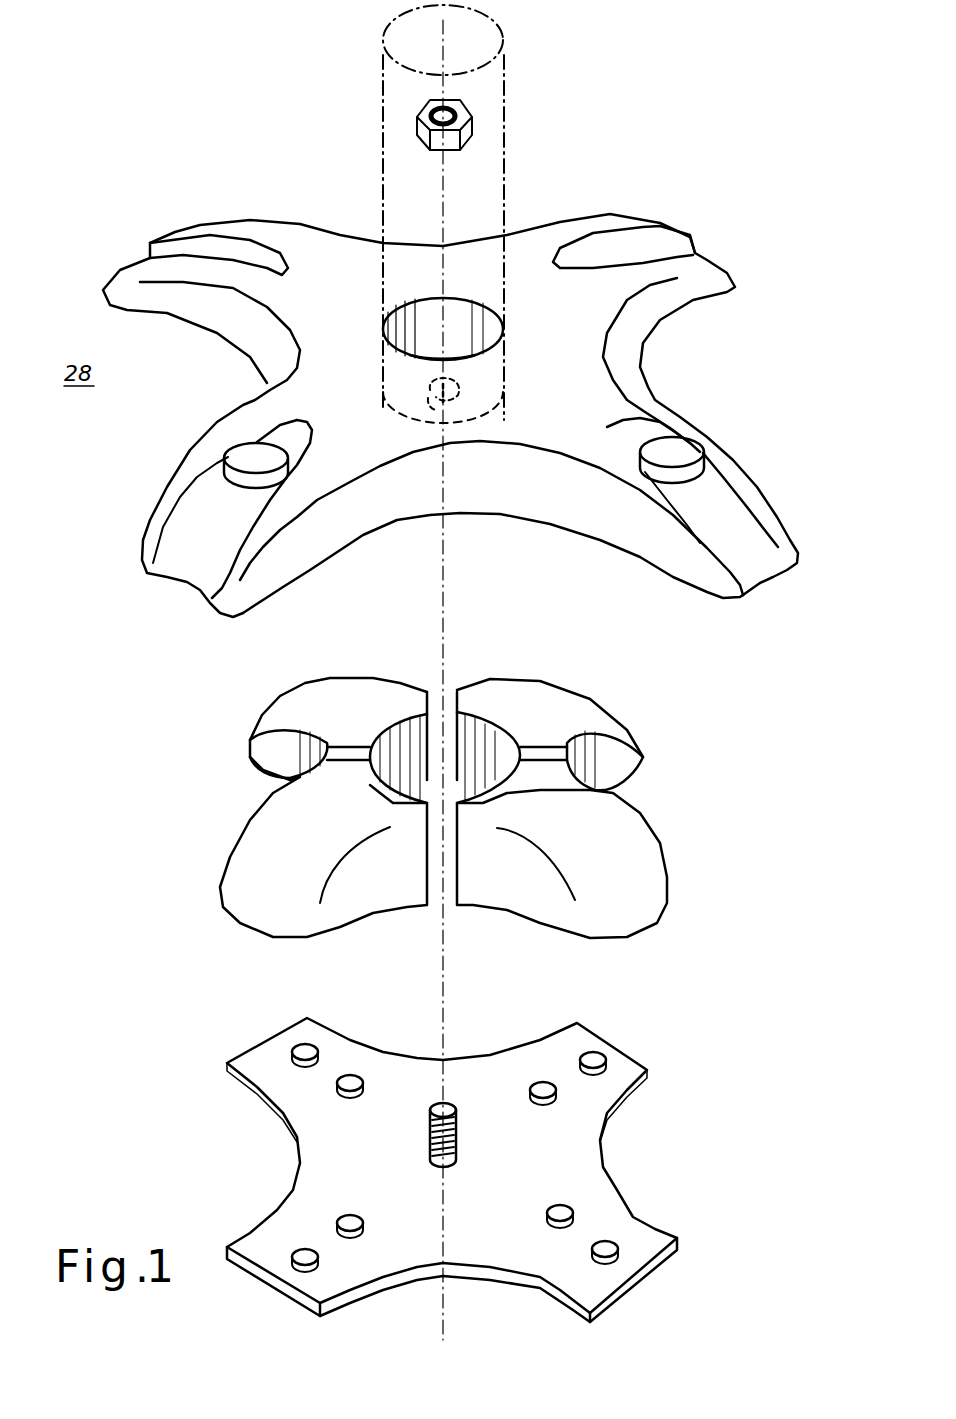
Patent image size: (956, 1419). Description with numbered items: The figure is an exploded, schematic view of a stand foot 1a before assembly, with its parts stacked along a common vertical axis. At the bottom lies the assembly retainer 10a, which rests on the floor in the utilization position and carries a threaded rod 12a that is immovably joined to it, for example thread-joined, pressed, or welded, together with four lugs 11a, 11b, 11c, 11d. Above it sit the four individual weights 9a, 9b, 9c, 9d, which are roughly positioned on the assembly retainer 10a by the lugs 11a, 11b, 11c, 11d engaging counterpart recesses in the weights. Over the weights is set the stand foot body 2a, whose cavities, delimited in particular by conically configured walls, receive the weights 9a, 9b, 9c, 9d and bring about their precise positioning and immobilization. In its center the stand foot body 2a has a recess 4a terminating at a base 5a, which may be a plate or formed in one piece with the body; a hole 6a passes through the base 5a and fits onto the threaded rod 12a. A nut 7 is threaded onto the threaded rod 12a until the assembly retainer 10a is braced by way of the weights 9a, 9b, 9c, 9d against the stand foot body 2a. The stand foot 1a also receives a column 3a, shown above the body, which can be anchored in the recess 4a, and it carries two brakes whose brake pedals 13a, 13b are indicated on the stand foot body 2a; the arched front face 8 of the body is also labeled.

The stand foot 1a is at (343, 220).
The stand foot body 2a is at (575, 393).
The column 3a is at (503, 173).
The recess 4a is at (484, 328).
The base 5a is at (487, 398).
The hole 6a is at (432, 407).
The nut 7 is at (470, 137).
The arched front face 8 is at (440, 543).
The individual weight 9a is at (285, 715).
The individual weight 9b is at (600, 718).
The individual weight 9c is at (650, 898).
The individual weight 9d is at (250, 875).
The assembly retainer 10a is at (480, 1161).
The lug 11a is at (293, 1055).
The lug 11b is at (603, 1076).
The lug 11c is at (593, 1238).
The lug 11d is at (338, 1226).
The threaded rod 12a is at (463, 1124).
The brake pedal 13a is at (240, 462).
The brake pedal 13b is at (683, 453).